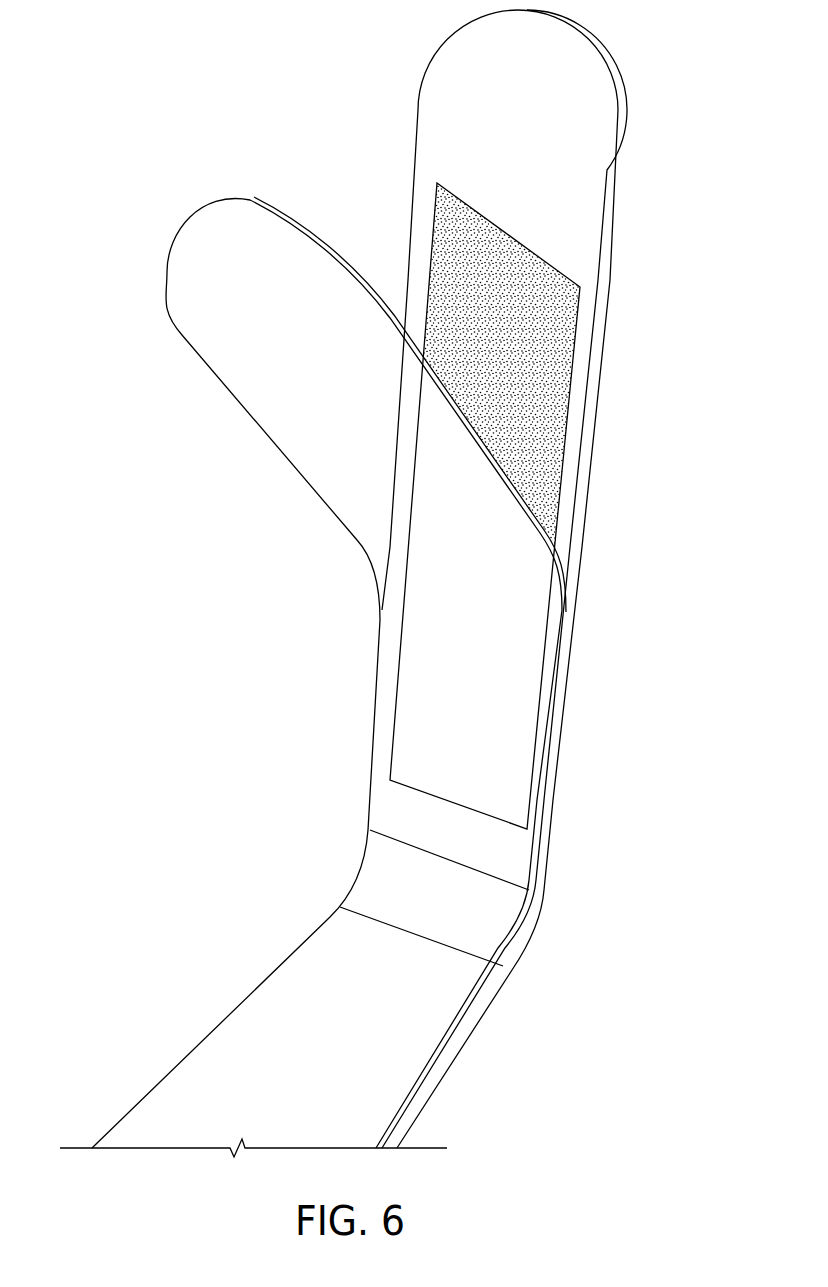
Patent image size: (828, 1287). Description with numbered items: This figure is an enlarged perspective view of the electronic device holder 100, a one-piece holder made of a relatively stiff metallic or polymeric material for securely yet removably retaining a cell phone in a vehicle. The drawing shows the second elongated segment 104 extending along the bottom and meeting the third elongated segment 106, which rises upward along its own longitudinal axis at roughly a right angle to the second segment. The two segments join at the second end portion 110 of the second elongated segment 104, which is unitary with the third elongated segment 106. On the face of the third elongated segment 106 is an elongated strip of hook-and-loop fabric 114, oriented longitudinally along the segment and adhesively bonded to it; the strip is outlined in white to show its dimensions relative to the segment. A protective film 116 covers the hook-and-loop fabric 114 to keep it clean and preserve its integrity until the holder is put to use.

The electronic device holder 100 is at (300, 669).
The second elongated segment 104 is at (167, 1062).
The third elongated segment 106 is at (624, 200).
The second end portion 110 is at (542, 956).
The hook-and-loop fabric 114 is at (513, 342).
The protective film 116 is at (197, 367).